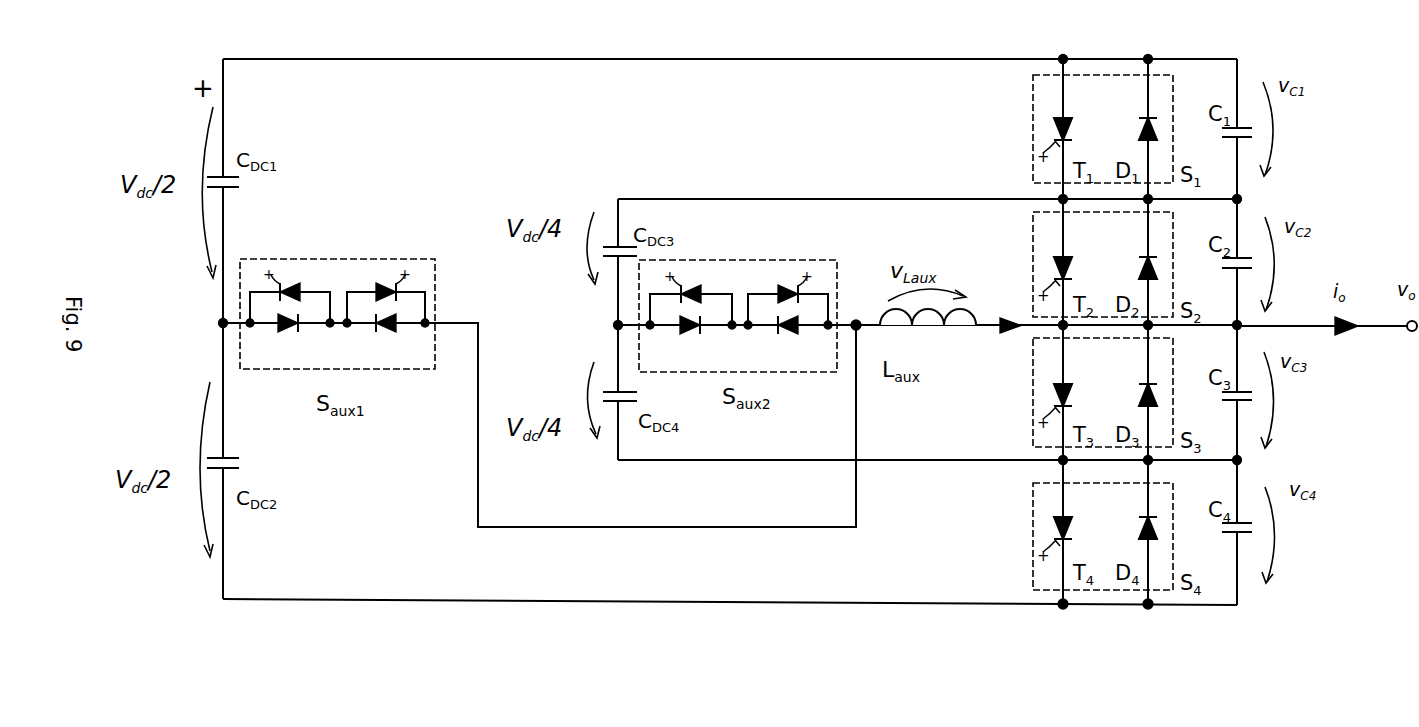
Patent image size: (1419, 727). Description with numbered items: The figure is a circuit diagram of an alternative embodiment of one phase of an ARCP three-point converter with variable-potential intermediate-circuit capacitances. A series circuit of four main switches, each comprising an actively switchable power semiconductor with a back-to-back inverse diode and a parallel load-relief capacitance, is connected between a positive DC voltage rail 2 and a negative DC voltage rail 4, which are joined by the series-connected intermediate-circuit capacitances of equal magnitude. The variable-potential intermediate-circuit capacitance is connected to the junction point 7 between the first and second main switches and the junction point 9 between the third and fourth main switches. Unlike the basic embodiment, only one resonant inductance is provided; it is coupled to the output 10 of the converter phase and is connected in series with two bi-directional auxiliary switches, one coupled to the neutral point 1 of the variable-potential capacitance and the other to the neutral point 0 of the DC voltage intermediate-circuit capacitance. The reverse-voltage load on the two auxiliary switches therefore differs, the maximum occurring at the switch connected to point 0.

The voltage neutral point 0 is at (213, 309).
The voltage neutral point 1 is at (610, 312).
The positive DC voltage rail 2 is at (730, 40).
The negative DC voltage rail 4 is at (730, 623).
The junction point 7 is at (927, 181).
The junction point 9 is at (927, 442).
The output 10 is at (1327, 346).